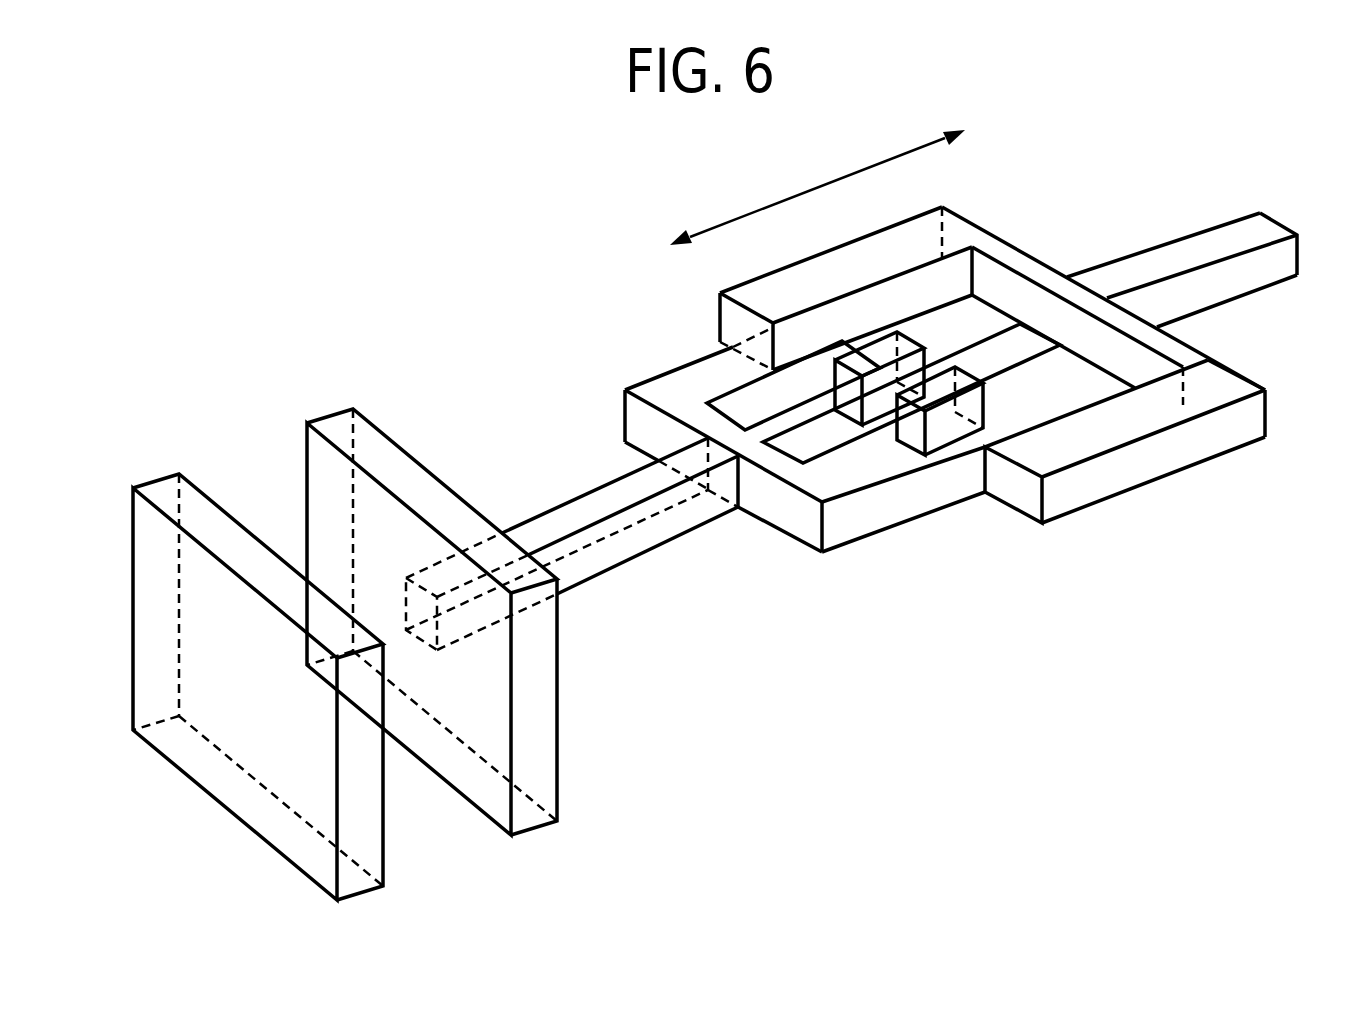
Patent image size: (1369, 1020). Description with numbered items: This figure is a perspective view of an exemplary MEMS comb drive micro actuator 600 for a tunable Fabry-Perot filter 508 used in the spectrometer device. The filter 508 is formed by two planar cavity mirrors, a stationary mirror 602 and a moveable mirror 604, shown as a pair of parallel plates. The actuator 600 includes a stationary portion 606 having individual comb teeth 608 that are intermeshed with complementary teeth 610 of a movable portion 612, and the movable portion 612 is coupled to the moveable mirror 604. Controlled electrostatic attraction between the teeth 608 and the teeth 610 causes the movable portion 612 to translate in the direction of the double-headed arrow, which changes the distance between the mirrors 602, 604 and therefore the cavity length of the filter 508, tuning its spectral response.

The comb drive micro actuator 600 is at (556, 281).
The tunable Fabry-Perot filter 508 is at (363, 380).
The stationary mirror 602 is at (370, 835).
The moveable mirror 604 is at (545, 752).
The stationary portion 606 is at (1237, 280).
The comb teeth 608 is at (1150, 462).
The complementary teeth 610 is at (870, 517).
The movable portion 612 is at (633, 543).